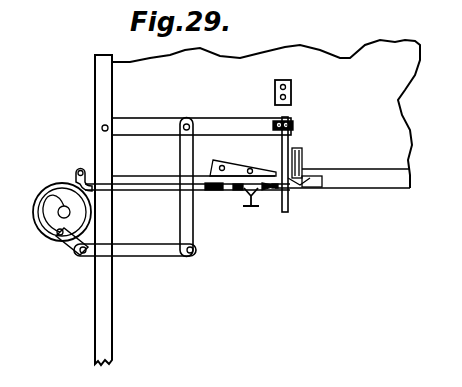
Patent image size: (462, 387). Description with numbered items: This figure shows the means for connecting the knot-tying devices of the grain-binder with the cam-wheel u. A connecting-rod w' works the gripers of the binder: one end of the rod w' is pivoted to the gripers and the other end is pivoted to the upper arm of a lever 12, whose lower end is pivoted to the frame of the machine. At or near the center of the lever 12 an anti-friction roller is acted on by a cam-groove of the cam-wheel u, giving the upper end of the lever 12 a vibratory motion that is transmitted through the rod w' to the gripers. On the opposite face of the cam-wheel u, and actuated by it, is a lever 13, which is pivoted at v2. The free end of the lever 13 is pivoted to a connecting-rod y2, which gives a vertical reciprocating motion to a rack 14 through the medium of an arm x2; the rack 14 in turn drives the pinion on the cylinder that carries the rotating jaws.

The lever 12 is at (76, 175).
The lever 13 is at (64, 244).
The rack 14 is at (296, 171).
The cam-wheel u is at (58, 215).
The connecting-rod w' is at (187, 195).
The arm x2 is at (202, 125).
The connecting-rod y2 is at (190, 187).
The pivot v2 is at (135, 261).